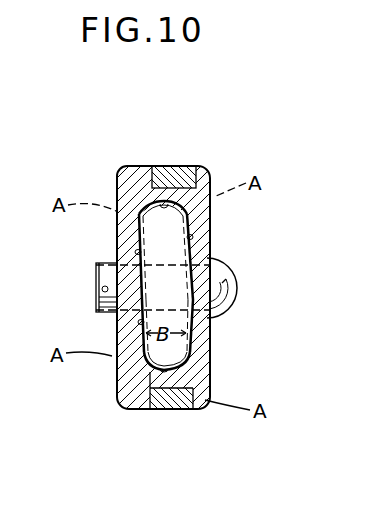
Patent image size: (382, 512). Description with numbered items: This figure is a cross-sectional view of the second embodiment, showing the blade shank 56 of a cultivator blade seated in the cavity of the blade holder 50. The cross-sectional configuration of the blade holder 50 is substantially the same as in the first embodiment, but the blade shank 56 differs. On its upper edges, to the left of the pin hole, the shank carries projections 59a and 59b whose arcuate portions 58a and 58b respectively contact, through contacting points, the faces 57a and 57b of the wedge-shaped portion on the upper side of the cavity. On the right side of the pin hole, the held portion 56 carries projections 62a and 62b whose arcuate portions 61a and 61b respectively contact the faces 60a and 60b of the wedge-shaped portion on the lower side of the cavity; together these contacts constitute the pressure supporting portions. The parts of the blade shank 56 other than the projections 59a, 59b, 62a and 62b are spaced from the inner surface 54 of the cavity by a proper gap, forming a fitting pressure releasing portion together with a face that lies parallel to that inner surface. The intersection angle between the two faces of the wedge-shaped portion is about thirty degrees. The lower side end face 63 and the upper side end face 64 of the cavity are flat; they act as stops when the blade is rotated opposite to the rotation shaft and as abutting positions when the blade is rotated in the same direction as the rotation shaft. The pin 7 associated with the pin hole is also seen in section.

The blade holder 50 is at (150, 166).
The upper side end face 64 is at (168, 166).
The lower side end face 63 is at (163, 410).
The arcuate portion 58a is at (112, 178).
The arcuate portion 58b is at (205, 170).
The projection 59a is at (130, 230).
The projection 59b is at (205, 196).
The face of wedge shape portion 57a is at (126, 258).
The face of wedge shape portion 57b is at (207, 228).
The cavity inner surface 54 is at (207, 250).
The blade shank 56 is at (225, 268).
The inner arcuate element 7 is at (232, 296).
The face of wedge shape portion 60a is at (118, 330).
The face of wedge shape portion 60b is at (210, 332).
The projection 62a is at (126, 395).
The projection 62b is at (205, 352).
The arcuate portion 61a is at (120, 370).
The arcuate portion 61b is at (200, 370).